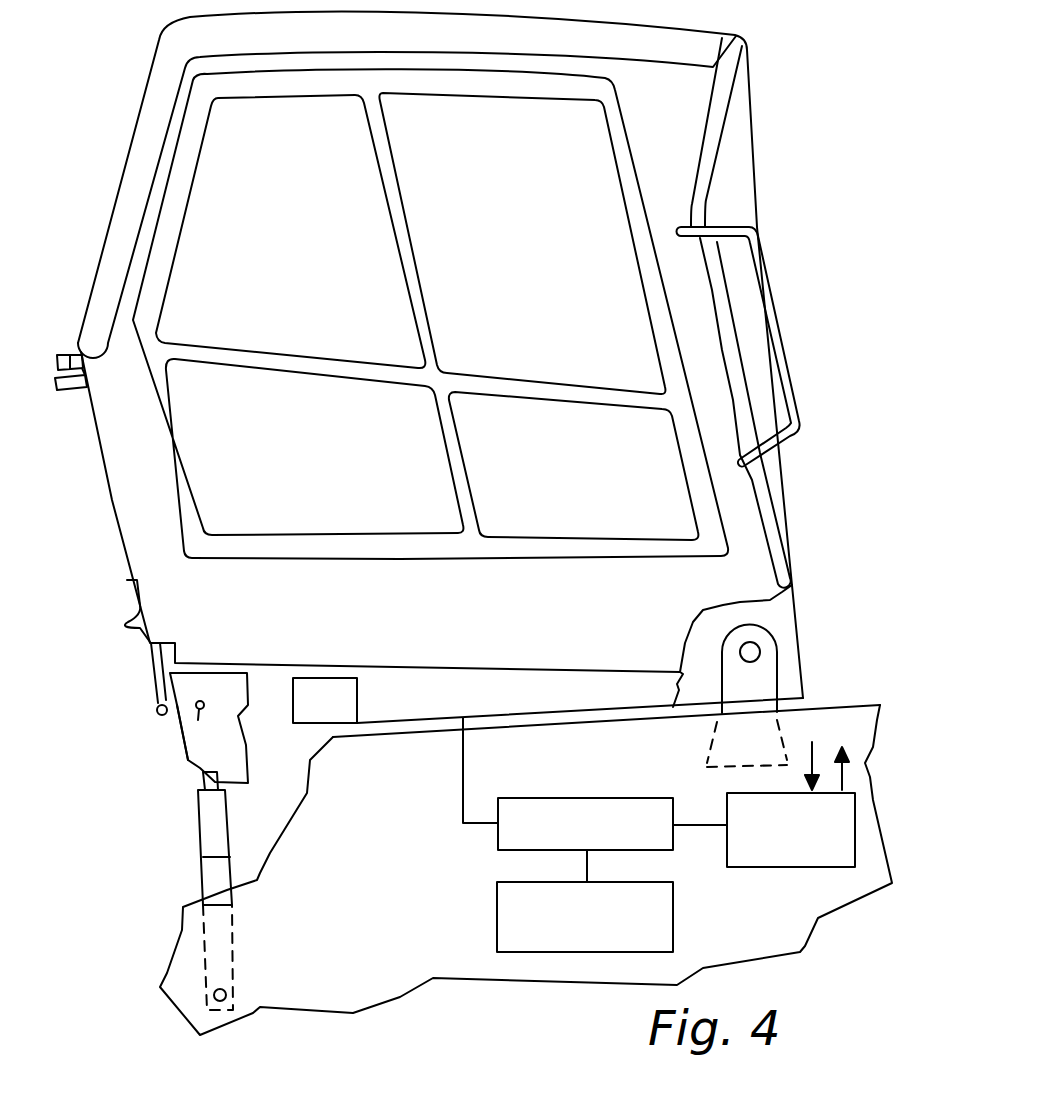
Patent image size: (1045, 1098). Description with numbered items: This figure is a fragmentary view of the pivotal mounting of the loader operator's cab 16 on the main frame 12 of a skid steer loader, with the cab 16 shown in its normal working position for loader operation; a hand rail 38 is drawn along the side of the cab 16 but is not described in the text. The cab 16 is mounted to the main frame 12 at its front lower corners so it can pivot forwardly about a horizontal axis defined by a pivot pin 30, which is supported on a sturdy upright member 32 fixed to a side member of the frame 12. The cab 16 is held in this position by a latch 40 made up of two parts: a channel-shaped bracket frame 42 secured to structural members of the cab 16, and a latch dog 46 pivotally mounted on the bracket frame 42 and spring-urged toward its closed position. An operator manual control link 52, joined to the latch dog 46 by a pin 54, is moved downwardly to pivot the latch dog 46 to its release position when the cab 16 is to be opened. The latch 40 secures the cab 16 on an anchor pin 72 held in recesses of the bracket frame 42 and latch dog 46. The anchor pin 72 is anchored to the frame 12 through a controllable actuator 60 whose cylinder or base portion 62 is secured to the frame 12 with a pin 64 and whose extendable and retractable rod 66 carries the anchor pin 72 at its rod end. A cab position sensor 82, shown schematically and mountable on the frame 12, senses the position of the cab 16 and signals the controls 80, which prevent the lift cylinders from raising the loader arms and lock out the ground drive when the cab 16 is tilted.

The main frame 12 is at (853, 723).
The cab 16 is at (118, 228).
The pivot pin 30 is at (752, 647).
The upright member 32 is at (763, 677).
The hand rail 38 is at (678, 143).
The latch 40 is at (185, 731).
The bracket frame 42 is at (197, 690).
The latch dog 46 is at (227, 745).
The operator manual control link 52 is at (150, 650).
The pin 54 is at (157, 712).
The controllable actuator 60 is at (203, 831).
The cylinder or base portion 62 is at (213, 857).
The pin 64 is at (222, 988).
The rod 66 is at (200, 780).
The anchor pin 72 is at (183, 740).
The controls 80 is at (552, 807).
The cab position sensor 82 is at (333, 712).